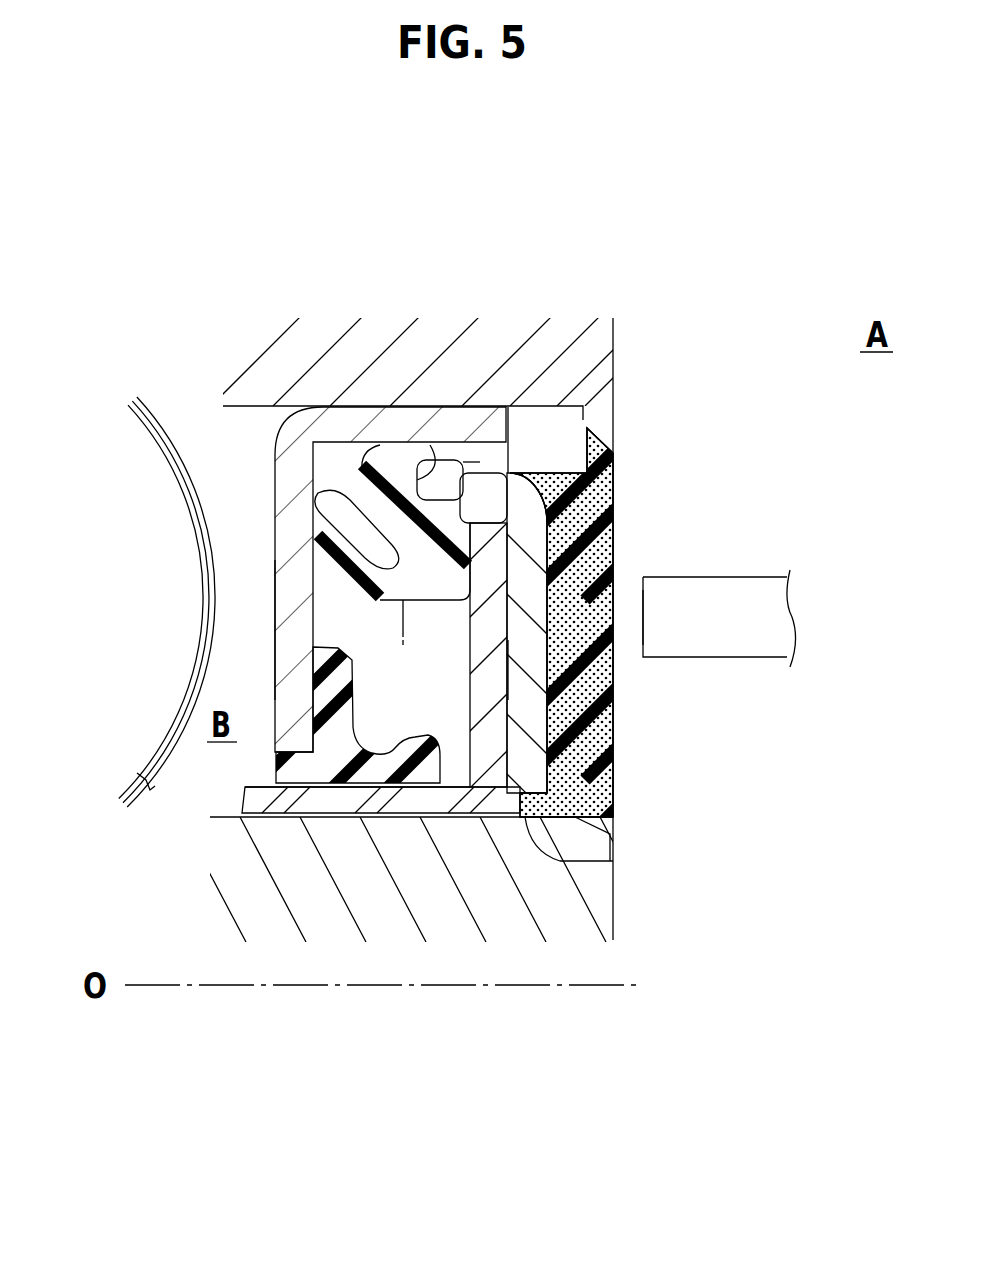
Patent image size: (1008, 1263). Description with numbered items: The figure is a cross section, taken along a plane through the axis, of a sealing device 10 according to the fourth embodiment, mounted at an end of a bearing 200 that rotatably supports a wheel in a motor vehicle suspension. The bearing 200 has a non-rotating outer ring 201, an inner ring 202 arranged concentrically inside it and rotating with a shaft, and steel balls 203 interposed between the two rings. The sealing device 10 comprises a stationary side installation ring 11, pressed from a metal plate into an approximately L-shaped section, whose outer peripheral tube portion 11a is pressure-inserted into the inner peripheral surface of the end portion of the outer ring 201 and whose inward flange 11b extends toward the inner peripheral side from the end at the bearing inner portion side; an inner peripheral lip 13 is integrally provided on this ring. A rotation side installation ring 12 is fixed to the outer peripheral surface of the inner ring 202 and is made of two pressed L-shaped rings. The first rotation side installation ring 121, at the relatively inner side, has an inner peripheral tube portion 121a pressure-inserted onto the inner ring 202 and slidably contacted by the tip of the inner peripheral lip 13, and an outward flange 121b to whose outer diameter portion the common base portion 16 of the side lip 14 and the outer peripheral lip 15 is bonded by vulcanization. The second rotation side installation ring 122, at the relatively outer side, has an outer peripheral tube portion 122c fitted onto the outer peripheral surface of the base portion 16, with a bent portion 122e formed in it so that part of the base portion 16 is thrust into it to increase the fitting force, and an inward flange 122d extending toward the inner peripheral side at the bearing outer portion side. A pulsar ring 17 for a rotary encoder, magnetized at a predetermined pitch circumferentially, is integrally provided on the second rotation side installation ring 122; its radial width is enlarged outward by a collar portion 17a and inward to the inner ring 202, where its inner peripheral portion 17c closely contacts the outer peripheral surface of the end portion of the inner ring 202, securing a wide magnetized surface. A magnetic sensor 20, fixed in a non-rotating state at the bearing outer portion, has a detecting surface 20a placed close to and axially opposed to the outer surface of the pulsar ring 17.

The sealing device 10 is at (262, 442).
The stationary side installation ring 11 is at (496, 402).
The outer peripheral tube portion 11a is at (483, 470).
The inward flange 11b is at (292, 567).
The rotation side installation ring 12 is at (460, 824).
The inner peripheral lip 13 is at (386, 800).
The side lip 14 is at (330, 528).
The outer peripheral lip 15 is at (377, 458).
The base portion 16 is at (445, 580).
The pulsar ring 17 is at (575, 560).
The collar portion 17a is at (600, 443).
The inner peripheral portion 17c is at (560, 855).
The magnetic sensor 20 is at (723, 607).
The detecting surface 20a is at (640, 608).
The first rotation side installation ring 121 is at (495, 805).
The inner peripheral tube portion 121a is at (322, 808).
The outward flange 121b is at (490, 712).
The second rotation side installation ring 122 is at (550, 520).
The outer peripheral tube portion 122c is at (585, 428).
The inward flange 122d is at (530, 668).
The bent portion 122e is at (452, 460).
The bearing 200 is at (377, 300).
The outer ring 201 is at (239, 321).
The inner ring 202 is at (417, 910).
The steel balls 203 is at (147, 777).